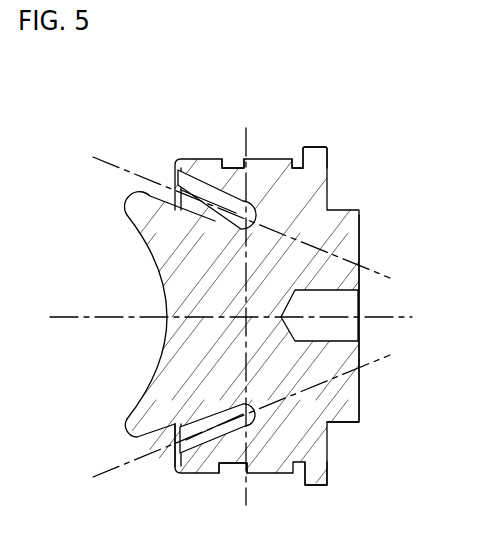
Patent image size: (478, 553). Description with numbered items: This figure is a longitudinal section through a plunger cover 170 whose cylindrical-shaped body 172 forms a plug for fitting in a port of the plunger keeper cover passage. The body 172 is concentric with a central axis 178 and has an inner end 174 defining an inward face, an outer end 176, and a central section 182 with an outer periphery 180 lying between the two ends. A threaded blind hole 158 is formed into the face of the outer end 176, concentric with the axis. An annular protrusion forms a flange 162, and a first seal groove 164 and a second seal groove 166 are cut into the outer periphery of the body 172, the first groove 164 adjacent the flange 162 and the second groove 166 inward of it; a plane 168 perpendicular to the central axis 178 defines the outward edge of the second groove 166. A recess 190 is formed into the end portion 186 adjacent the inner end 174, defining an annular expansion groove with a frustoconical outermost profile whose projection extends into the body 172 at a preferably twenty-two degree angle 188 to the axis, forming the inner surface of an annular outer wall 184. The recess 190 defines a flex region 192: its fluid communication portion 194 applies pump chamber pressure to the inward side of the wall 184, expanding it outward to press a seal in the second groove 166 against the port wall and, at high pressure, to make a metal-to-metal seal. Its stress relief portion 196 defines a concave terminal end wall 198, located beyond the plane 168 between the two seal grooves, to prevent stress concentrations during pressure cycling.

The threaded blind hole 158 is at (356, 341).
The flange 162 is at (311, 150).
The first seal groove 164 is at (293, 157).
The second seal groove 166 is at (238, 157).
The plane 168 is at (251, 497).
The plunger cover 170 is at (118, 128).
The cylindrical-shaped body 172 is at (335, 221).
The inner end 174 is at (153, 372).
The outer end 176 is at (333, 270).
The central axis 178 is at (72, 320).
The outer periphery 180 is at (218, 468).
The central section 182 is at (294, 448).
The outer wall 184 is at (197, 175).
The end portion 186 is at (180, 470).
The angle 188 is at (110, 467).
The recess 190 is at (172, 200).
The flex region 192 is at (229, 455).
The fluid communication portion 194 is at (200, 208).
The stress relief portion 196 is at (200, 235).
The terminal end wall 198 is at (258, 223).